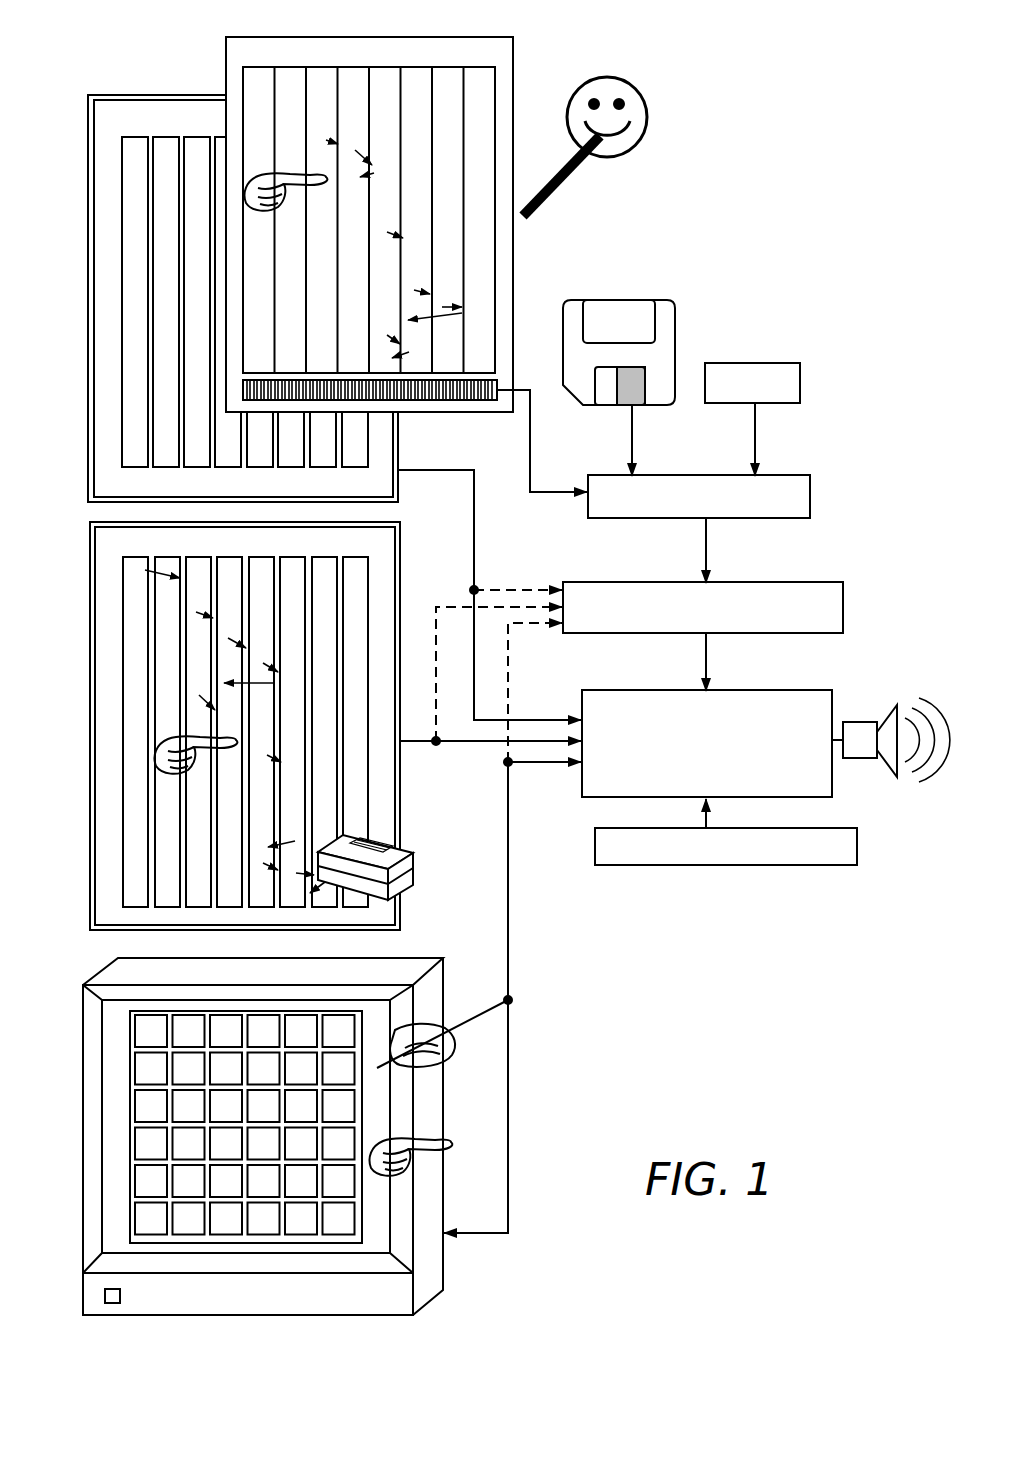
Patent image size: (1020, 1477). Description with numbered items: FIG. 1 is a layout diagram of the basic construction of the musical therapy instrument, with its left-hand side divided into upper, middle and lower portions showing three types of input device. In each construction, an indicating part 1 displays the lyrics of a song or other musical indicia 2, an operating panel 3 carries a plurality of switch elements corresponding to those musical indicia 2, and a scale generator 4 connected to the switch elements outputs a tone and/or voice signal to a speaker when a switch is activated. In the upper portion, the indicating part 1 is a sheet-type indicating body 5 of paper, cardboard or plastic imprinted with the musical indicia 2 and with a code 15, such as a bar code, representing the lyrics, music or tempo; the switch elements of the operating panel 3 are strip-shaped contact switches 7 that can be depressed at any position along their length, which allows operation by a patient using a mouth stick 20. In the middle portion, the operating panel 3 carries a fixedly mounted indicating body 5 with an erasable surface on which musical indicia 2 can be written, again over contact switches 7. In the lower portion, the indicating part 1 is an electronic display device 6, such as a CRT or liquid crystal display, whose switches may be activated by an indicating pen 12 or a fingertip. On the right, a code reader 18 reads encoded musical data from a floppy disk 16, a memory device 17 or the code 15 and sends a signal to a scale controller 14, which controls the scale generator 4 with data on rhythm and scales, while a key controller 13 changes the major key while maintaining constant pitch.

The indicating part 1 is at (522, 78).
The musical indicia 2 is at (175, 130).
The operating panel 3 is at (125, 95).
The scale generator 4 is at (800, 698).
The indicating body 5 is at (345, 38).
The electronic display device 6 is at (400, 974).
The strip-shaped contact switches 7 is at (122, 220).
The indicating pen 12 is at (458, 1037).
The key controller 13 is at (843, 870).
The scale controller 14 is at (790, 594).
The code 15 is at (437, 395).
The floppy disk 16 is at (665, 302).
The memory device (ROM) 17 is at (757, 372).
The code reader 18 is at (797, 481).
The mouth stick 20 is at (558, 188).